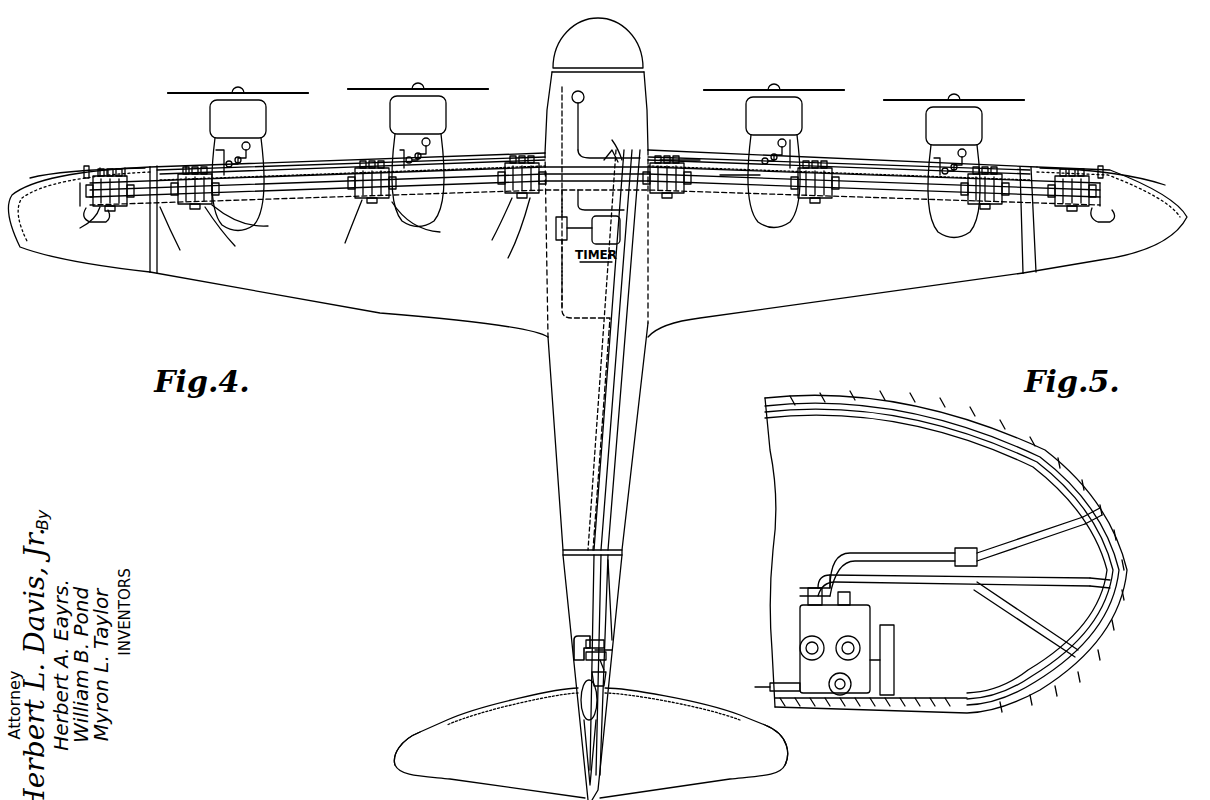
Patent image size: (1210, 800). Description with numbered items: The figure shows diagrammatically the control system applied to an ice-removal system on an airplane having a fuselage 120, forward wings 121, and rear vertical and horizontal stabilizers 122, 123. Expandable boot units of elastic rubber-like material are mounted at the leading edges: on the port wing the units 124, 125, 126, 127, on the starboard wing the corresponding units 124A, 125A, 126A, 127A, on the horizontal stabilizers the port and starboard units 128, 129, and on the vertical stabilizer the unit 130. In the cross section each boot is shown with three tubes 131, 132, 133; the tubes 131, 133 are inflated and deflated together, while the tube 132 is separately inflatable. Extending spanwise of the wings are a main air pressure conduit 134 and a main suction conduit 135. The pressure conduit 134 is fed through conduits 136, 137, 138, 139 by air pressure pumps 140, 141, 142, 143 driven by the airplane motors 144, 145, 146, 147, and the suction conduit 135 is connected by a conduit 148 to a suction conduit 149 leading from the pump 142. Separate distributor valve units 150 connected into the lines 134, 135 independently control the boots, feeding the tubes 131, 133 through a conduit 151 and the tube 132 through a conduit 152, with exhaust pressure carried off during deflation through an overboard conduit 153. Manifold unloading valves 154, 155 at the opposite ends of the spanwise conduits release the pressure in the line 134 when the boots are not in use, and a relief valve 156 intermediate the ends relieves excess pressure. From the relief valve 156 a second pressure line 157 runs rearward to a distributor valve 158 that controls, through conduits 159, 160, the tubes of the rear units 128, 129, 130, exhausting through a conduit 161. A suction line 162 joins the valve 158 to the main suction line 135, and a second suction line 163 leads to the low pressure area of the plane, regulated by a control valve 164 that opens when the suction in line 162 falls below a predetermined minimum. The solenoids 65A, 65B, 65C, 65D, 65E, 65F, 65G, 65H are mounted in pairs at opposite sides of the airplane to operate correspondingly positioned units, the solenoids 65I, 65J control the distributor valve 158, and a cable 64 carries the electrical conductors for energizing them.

In FIG. 4, the cable 64 is at (362, 205).
In FIG. 4, the solenoid 65A is at (81, 226).
In FIG. 4, the solenoid 65B is at (180, 239).
In FIG. 4, the solenoid 65C is at (231, 236).
In FIG. 4, the solenoid 65D is at (252, 225).
In FIG. 4, the solenoid 65E is at (342, 233).
In FIG. 4, the solenoid 65F is at (429, 226).
In FIG. 4, the solenoid 65G is at (493, 229).
In FIG. 4, the solenoid 65H is at (509, 238).
In FIG. 4, the solenoid 65I is at (619, 651).
In FIG. 4, the solenoid 65J is at (614, 640).
In FIG. 4, the fuselage 120 is at (555, 377).
In FIG. 4, the forward wings 121 is at (387, 300).
In FIG. 4, the vertical stabilizer 122 is at (586, 728).
In FIG. 4, the horizontal stabilizers 123 is at (540, 715).
In FIG. 4, the expandable unit 124 is at (65, 172).
In FIG. 4, the expandable unit 124A is at (1110, 170).
In FIG. 4, the expandable unit 125 is at (157, 166).
In FIG. 4, the expandable unit 125A is at (1022, 168).
In FIG. 4, the expandable unit 126 is at (310, 165).
In FIG. 4, the expandable unit 126A is at (862, 165).
In FIG. 4, the expandable unit 127 is at (495, 160).
In FIG. 4, the expandable unit 127A is at (714, 165).
In FIG. 5, the expandable unit 127A is at (1040, 455).
In FIG. 4, the expandable unit 128 is at (420, 722).
In FIG. 4, the expandable unit 129 is at (700, 706).
In FIG. 4, the expandable unit 130 is at (578, 688).
In FIG. 5, the inflatable tube 131 is at (1100, 509).
In FIG. 5, the inflatable tube 132 is at (1112, 581).
In FIG. 5, the inflatable tube 133 is at (1080, 651).
In FIG. 4, the main air pressure conduit 134 is at (310, 197).
In FIG. 4, the main suction conduit 135 is at (458, 185).
In FIG. 4, the conduit 136 is at (222, 148).
In FIG. 4, the conduit 137 is at (400, 152).
In FIG. 4, the conduit 138 is at (742, 190).
In FIG. 4, the conduit 139 is at (936, 156).
In FIG. 4, the air pressure pump 140 is at (238, 159).
In FIG. 4, the air pressure pump 141 is at (418, 155).
In FIG. 4, the air pressure pump 142 is at (774, 156).
In FIG. 4, the air pressure pump 143 is at (954, 166).
In FIG. 4, the airplane motor 144 is at (255, 112).
In FIG. 4, the airplane motor 145 is at (430, 98).
In FIG. 4, the airplane motor 146 is at (790, 98).
In FIG. 4, the airplane motor 147 is at (975, 112).
In FIG. 4, the conduit 148 is at (690, 158).
In FIG. 4, the suction conduit 149 is at (795, 140).
In FIG. 4, the distributor valve unit 150 is at (116, 208).
In FIG. 5, the distributor valve unit 150 is at (800, 628).
In FIG. 4, the conduit 151 is at (125, 170).
In FIG. 5, the conduit 151 is at (890, 552).
In FIG. 4, the conduit 152 is at (104, 180).
In FIG. 5, the conduit 152 is at (925, 586).
In FIG. 4, the exhaust or overboard conduit 153 is at (112, 170).
In FIG. 5, the exhaust or overboard conduit 153 is at (812, 586).
In FIG. 4, the manifold unloading valve 154 is at (1110, 205).
In FIG. 4, the manifold unloading valve 155 is at (83, 208).
In FIG. 4, the relief valve 156 is at (612, 160).
In FIG. 4, the second pressure line 157 is at (618, 288).
In FIG. 4, the distributor valve 158 is at (608, 654).
In FIG. 4, the conduit 159 is at (575, 640).
In FIG. 4, the conduit 160 is at (606, 662).
In FIG. 4, the conduit 161 is at (605, 643).
In FIG. 4, the suction line 162 is at (628, 520).
In FIG. 4, the second suction line 163 is at (600, 760).
In FIG. 4, the control valve 164 is at (608, 680).